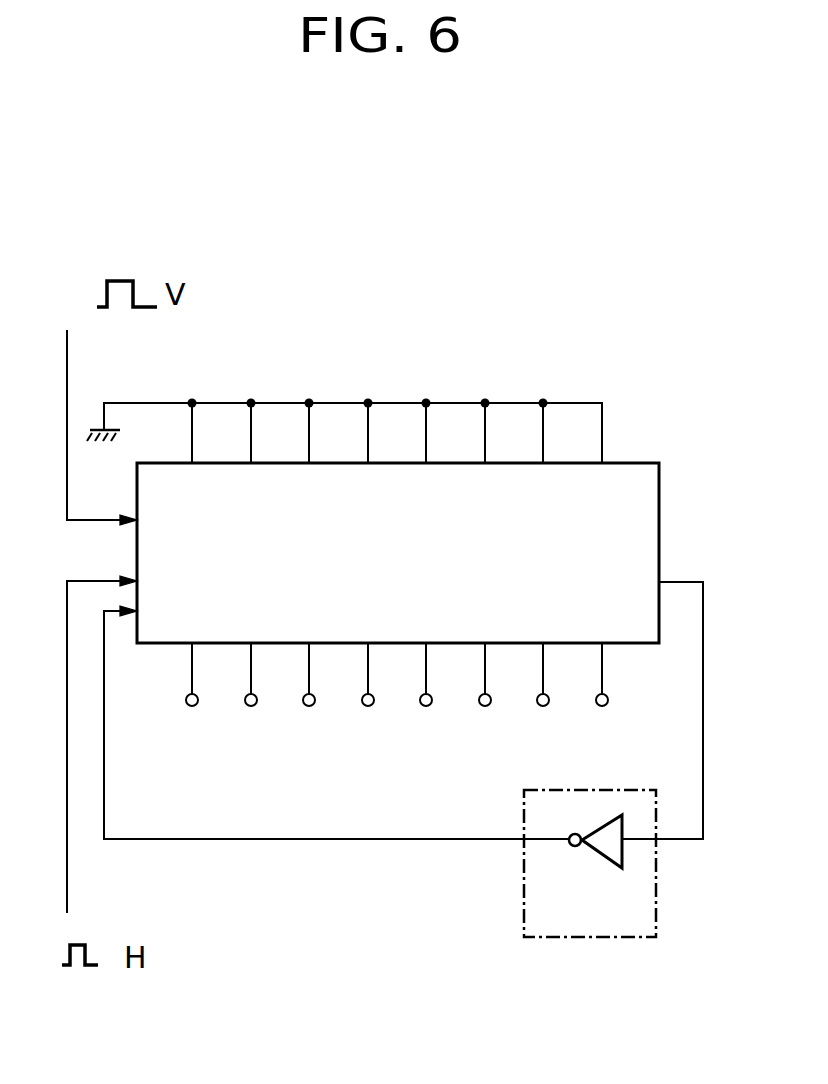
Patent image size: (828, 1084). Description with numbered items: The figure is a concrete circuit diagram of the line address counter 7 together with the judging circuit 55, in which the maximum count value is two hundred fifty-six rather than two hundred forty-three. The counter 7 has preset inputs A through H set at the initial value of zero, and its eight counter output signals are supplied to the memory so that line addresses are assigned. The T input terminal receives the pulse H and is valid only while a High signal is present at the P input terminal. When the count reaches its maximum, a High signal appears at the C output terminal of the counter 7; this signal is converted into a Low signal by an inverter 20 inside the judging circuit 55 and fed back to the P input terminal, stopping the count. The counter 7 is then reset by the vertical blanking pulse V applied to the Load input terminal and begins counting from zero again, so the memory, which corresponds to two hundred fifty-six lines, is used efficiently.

The line address counter 7 is at (660, 516).
The inverter 20 is at (592, 853).
The judging circuit 55 is at (590, 923).